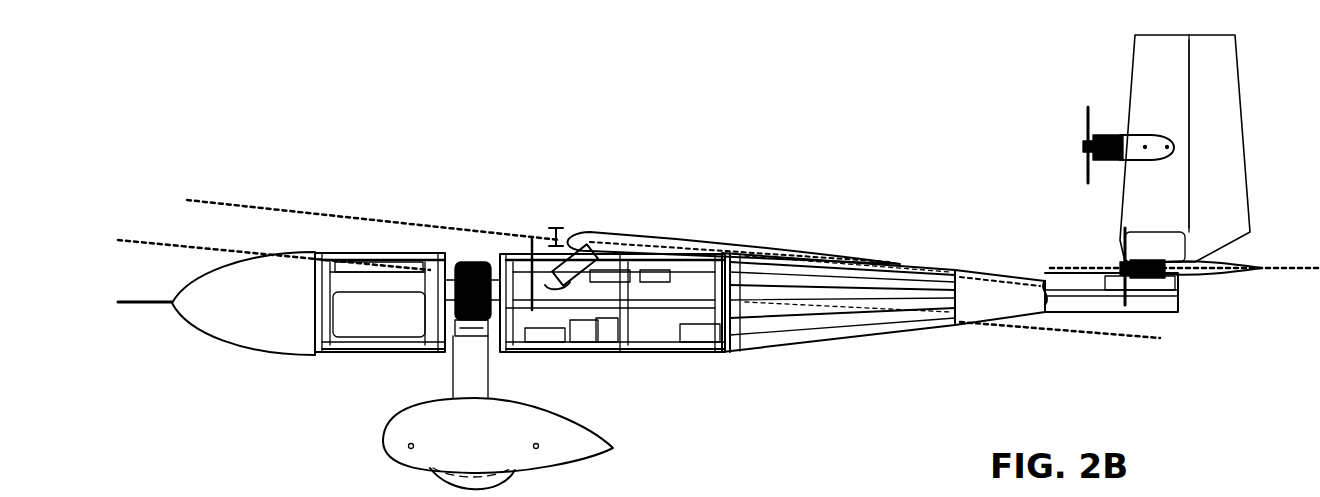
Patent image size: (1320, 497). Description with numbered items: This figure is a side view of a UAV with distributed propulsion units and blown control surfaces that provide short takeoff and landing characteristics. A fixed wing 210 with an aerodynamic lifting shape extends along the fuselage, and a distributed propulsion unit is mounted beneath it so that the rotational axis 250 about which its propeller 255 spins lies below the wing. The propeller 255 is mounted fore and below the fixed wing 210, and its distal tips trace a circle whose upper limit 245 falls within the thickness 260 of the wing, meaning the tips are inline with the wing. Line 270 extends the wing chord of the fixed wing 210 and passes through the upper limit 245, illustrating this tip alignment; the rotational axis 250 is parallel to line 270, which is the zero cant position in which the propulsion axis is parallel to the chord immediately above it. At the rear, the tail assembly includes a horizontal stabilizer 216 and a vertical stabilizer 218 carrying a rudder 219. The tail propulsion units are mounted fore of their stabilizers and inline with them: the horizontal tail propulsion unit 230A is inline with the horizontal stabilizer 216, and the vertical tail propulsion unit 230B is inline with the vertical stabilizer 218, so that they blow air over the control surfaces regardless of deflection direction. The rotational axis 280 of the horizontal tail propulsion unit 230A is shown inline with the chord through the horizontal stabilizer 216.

The fixed wing 210 is at (622, 240).
The horizontal stabilizer 216 is at (1195, 285).
The vertical stabilizer 218 is at (1105, 33).
The rudder 219 is at (1211, 134).
The upper limit 245 is at (531, 228).
The rotational axis 250 is at (140, 242).
The propeller 255 is at (530, 247).
The thickness 260 is at (556, 236).
The line 270 is at (322, 213).
The rotational axis 280 is at (1305, 272).
The horizontal tail propulsion unit 230A is at (1083, 256).
The vertical tail propulsion unit 230B is at (1060, 145).